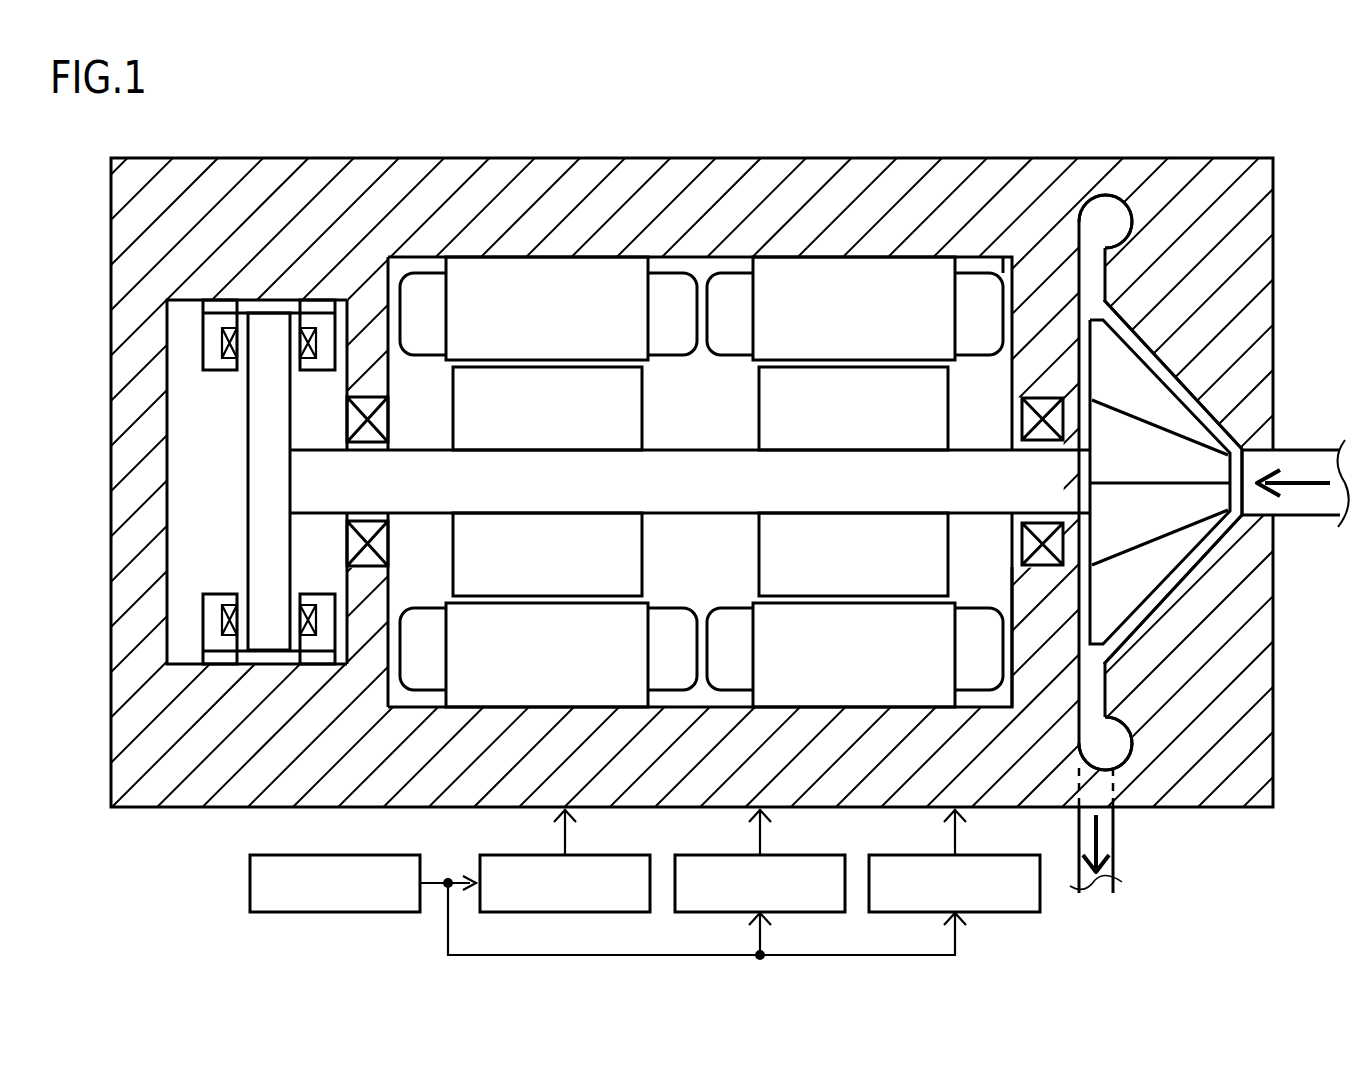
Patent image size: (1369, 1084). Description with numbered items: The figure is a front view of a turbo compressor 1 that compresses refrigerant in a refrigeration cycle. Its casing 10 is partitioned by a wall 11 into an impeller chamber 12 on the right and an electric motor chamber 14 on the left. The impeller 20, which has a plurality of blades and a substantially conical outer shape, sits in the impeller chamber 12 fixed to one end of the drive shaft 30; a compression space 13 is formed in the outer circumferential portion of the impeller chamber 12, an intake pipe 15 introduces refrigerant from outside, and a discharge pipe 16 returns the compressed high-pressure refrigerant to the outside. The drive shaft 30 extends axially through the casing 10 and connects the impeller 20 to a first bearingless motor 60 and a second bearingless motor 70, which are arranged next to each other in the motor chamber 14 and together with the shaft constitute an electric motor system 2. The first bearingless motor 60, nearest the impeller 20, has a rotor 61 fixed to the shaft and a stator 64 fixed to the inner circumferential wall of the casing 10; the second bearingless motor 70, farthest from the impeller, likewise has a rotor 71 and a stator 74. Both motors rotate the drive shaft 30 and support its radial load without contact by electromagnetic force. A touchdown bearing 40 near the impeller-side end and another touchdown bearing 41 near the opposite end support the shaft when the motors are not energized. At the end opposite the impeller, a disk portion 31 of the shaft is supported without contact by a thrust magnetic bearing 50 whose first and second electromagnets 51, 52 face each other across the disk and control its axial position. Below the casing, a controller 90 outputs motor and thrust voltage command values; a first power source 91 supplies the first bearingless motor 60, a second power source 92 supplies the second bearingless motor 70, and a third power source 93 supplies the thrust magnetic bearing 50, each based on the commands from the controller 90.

The turbo compressor 1 is at (1250, 128).
The electric motor system 2 is at (690, 448).
The casing 10 is at (683, 157).
The wall 11 is at (1040, 665).
The impeller chamber 12 is at (1195, 380).
The compression space 13 is at (1112, 210).
The electric motor chamber 14 is at (972, 268).
The intake pipe 15 is at (1323, 500).
The discharge pipe 16 is at (1112, 828).
The impeller 20 is at (1160, 560).
The drive shaft 30 is at (700, 515).
The disk portion 31 is at (265, 479).
The touchdown bearing 40 is at (1040, 398).
The touchdown bearing 41 is at (368, 407).
The thrust magnetic bearing 50 is at (200, 338).
The first electromagnet 51 is at (317, 322).
The second electromagnet 52 is at (215, 322).
The first bearingless motor 60 is at (870, 255).
The rotor 61 is at (940, 413).
The stator 64 is at (810, 277).
The second bearingless motor 70 is at (511, 255).
The rotor 71 is at (468, 412).
The stator 74 is at (595, 277).
The controller 90 is at (295, 855).
The first power source 91 is at (525, 855).
The second power source 92 is at (730, 855).
The third power source 93 is at (930, 855).